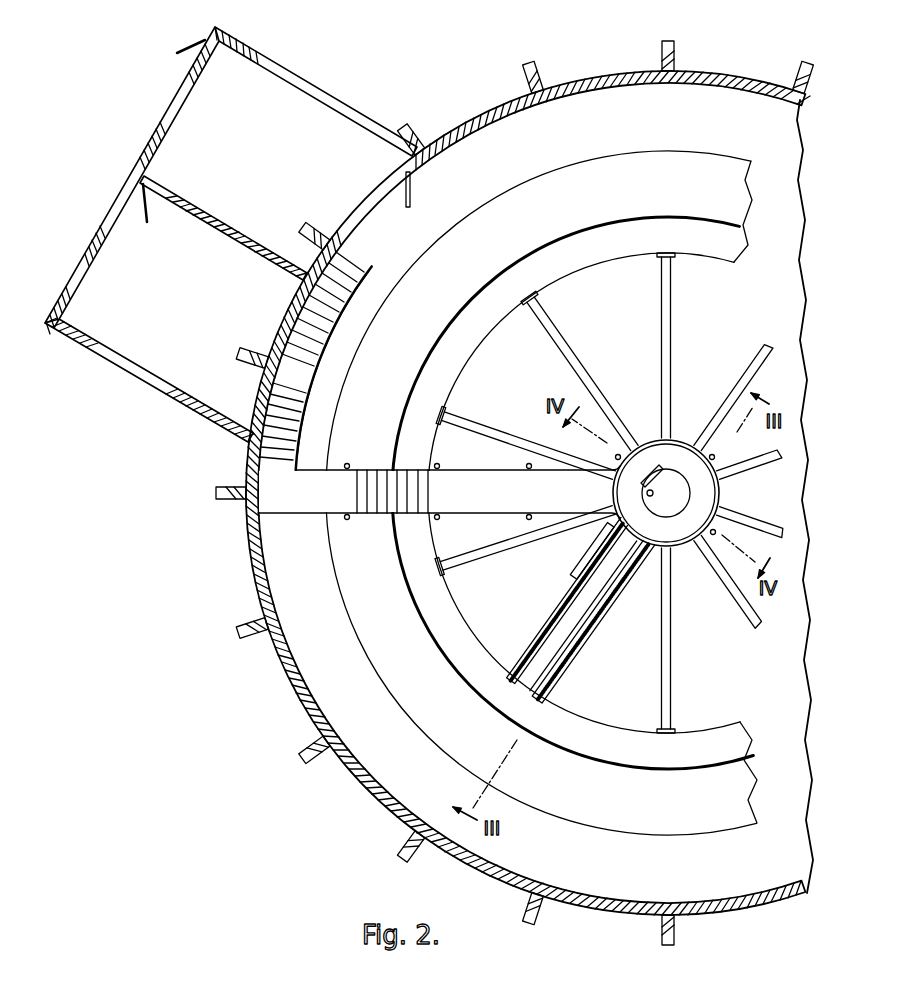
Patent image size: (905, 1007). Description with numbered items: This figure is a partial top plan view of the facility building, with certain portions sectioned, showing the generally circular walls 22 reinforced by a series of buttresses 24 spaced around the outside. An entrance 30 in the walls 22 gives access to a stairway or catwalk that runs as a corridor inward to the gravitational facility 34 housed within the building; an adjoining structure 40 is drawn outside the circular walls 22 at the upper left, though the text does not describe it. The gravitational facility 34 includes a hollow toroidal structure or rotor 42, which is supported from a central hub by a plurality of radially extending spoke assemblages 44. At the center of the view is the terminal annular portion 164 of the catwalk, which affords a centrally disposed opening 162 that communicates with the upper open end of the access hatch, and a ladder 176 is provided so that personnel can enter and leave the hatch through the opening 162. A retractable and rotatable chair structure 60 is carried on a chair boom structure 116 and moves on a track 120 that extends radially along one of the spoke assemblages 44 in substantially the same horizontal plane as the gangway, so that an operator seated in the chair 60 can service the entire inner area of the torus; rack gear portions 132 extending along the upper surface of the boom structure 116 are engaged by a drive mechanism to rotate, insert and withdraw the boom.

The circular walls 22 is at (308, 684).
The buttresses 24 is at (660, 52).
The entrance 30 is at (393, 178).
The gravitational facility 34 is at (585, 177).
The adjoining building 40 is at (256, 58).
The hollow toroidal structure or rotor 42 is at (484, 212).
The spoke assemblages 44 is at (565, 356).
The retractable and rotatable chair structure 60 is at (592, 553).
The chair boom structure 116 is at (542, 670).
The track 120 is at (583, 640).
The rack gear portions 132 is at (556, 621).
The centrally disposed opening 162 is at (667, 478).
The terminal annular portion 164 is at (712, 499).
The ladder 176 is at (646, 493).